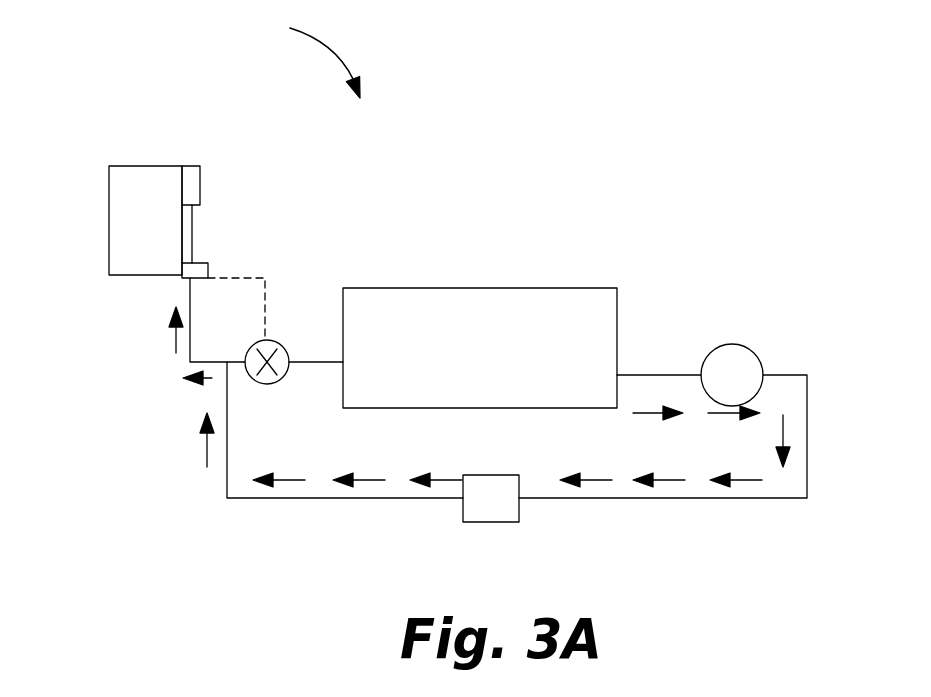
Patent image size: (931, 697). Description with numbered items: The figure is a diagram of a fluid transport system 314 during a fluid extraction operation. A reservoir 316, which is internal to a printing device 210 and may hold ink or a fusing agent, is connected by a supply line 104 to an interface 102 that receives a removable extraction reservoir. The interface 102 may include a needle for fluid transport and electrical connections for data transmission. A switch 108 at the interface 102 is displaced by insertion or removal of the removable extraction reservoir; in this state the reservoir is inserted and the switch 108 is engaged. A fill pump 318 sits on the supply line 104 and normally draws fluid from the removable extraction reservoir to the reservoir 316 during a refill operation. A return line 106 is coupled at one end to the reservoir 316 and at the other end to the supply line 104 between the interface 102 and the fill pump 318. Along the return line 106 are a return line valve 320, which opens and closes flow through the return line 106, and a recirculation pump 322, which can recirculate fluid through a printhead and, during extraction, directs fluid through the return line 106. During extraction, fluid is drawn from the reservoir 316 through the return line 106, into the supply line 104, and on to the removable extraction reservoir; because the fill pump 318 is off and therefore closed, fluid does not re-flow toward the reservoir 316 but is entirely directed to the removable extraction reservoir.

The fluid transport system 314 is at (296, 57).
The printing device 210 is at (142, 185).
The interface 102 is at (197, 185).
The switch 108 is at (182, 280).
The fill pump 318 is at (272, 352).
The supply line 104 is at (313, 363).
The reservoir 316 is at (503, 307).
The recirculation pump 322 is at (745, 342).
The return line 106 is at (693, 498).
The return line valve 320 is at (507, 512).